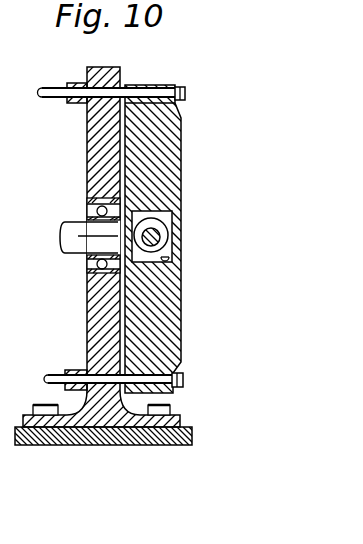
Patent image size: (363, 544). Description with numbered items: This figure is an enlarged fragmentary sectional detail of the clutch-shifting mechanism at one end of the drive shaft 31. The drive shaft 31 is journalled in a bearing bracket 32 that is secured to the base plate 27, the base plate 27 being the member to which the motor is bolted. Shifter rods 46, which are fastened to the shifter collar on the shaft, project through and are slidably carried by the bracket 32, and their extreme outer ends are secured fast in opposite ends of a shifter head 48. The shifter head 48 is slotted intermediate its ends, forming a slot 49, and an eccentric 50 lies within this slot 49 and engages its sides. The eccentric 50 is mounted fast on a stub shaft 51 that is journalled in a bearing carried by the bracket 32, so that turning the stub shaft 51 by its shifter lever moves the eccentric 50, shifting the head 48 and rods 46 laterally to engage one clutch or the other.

The base plate 27 is at (100, 445).
The drive shaft 31 is at (83, 236).
The bearing bracket 32 is at (103, 303).
The shifter rod 46 is at (38, 97).
The shifter head 48 is at (168, 167).
The slot 49 is at (167, 258).
The eccentric 50 is at (170, 221).
The stub shaft 51 is at (170, 236).